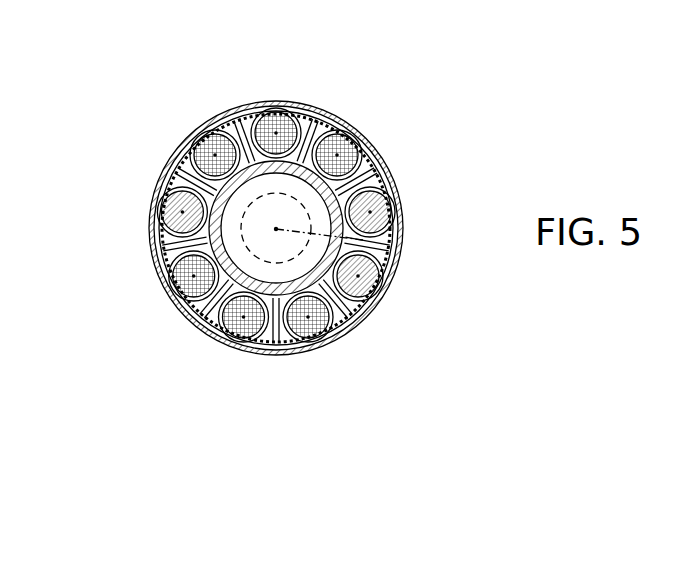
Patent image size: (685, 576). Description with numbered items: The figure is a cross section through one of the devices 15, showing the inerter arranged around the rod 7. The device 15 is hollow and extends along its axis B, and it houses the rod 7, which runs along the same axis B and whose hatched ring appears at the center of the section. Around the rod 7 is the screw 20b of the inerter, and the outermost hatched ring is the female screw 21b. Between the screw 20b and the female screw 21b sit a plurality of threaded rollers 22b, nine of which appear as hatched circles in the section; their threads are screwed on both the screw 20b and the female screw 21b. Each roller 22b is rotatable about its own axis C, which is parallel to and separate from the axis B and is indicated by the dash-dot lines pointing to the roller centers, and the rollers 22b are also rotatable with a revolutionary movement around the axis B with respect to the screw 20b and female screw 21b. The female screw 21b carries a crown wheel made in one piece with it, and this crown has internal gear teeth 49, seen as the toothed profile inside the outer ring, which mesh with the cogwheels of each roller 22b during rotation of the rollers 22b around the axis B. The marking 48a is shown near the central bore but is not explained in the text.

The device 15 is at (455, 132).
The female screw 21b is at (330, 100).
The screw 20b is at (253, 162).
The threaded rollers 22b is at (275, 124).
The internal gear teeth 49 is at (255, 182).
The rod 7 is at (313, 203).
The central bore 48a is at (189, 178).
The axis B is at (363, 240).
The axes C is at (280, 128).